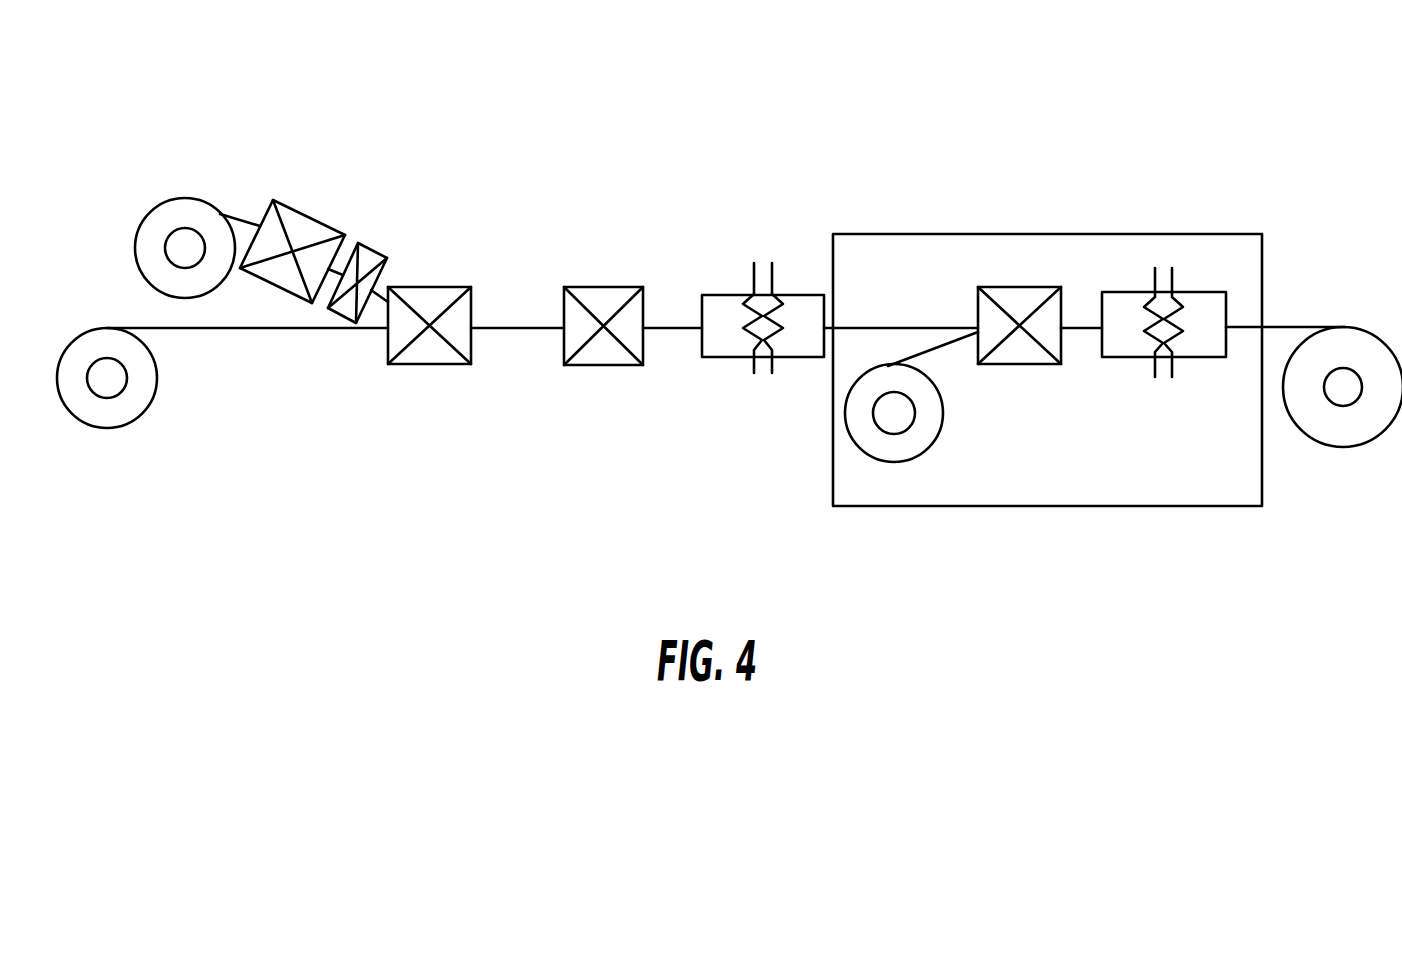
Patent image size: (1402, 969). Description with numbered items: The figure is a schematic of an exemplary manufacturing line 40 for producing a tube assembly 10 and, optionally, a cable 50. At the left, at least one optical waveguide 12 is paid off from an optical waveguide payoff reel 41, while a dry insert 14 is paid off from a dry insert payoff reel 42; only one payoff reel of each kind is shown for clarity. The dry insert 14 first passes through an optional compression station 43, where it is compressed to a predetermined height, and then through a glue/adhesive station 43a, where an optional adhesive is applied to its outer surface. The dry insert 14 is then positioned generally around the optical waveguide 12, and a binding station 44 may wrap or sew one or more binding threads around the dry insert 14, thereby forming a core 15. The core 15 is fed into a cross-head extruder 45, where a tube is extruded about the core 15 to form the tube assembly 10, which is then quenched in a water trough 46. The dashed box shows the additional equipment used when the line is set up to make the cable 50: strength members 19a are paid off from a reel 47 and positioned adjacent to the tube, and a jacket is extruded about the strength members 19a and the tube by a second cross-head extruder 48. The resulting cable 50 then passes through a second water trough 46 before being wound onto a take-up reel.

The manufacturing line 40 is at (1335, 450).
The optical waveguide payoff reel 41 is at (107, 398).
The dry insert payoff reel 42 is at (157, 203).
The optical waveguide 12 is at (208, 328).
The dry insert 14 is at (274, 200).
The compression station 43 is at (318, 218).
The glue/adhesive station 43a is at (373, 248).
The binding station 44 is at (427, 287).
The core 15 is at (513, 328).
The cross-head extruder 45 is at (608, 287).
The tube assembly 10 is at (671, 328).
The water trough 46 is at (717, 358).
The cross-head extruder 48 is at (997, 287).
The reel 47 is at (925, 453).
The strength members 19a is at (938, 347).
The cable 50 is at (1078, 328).